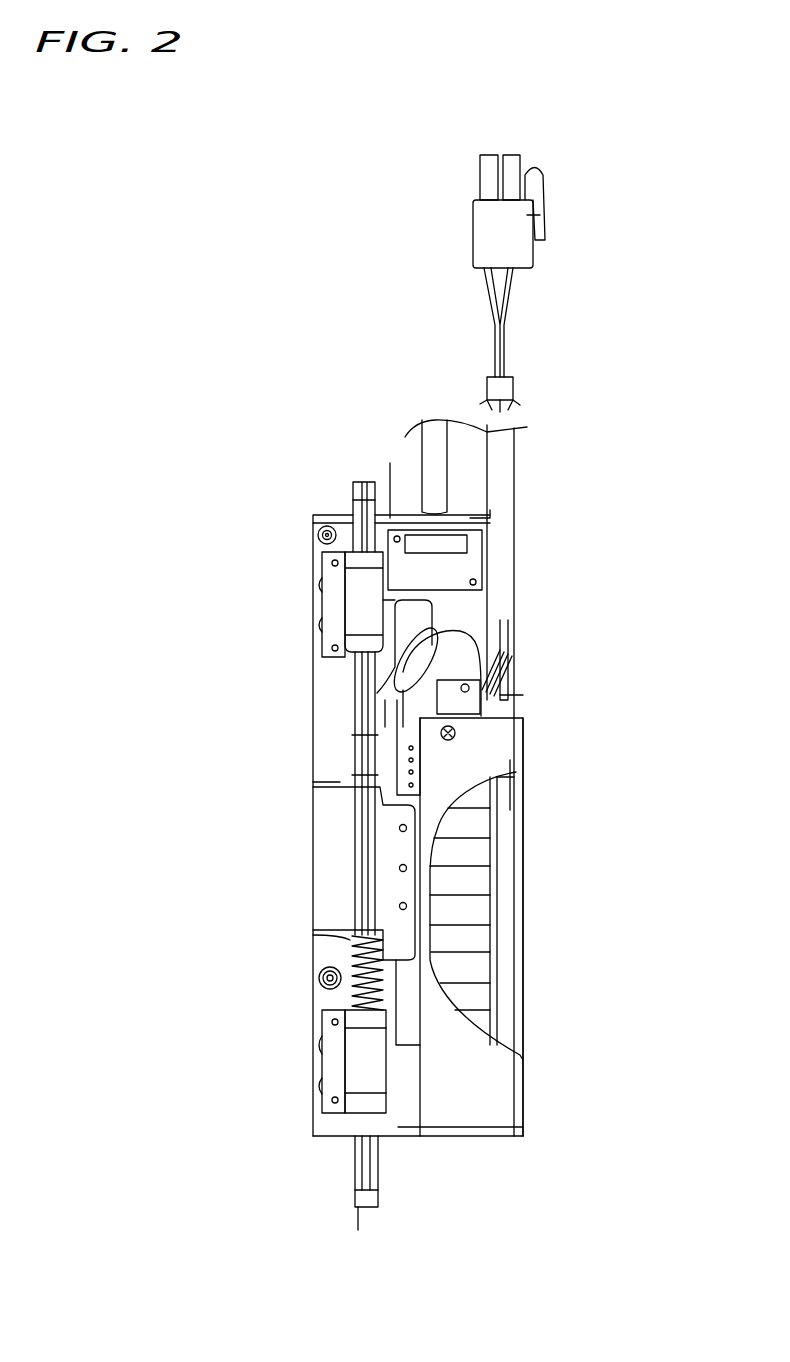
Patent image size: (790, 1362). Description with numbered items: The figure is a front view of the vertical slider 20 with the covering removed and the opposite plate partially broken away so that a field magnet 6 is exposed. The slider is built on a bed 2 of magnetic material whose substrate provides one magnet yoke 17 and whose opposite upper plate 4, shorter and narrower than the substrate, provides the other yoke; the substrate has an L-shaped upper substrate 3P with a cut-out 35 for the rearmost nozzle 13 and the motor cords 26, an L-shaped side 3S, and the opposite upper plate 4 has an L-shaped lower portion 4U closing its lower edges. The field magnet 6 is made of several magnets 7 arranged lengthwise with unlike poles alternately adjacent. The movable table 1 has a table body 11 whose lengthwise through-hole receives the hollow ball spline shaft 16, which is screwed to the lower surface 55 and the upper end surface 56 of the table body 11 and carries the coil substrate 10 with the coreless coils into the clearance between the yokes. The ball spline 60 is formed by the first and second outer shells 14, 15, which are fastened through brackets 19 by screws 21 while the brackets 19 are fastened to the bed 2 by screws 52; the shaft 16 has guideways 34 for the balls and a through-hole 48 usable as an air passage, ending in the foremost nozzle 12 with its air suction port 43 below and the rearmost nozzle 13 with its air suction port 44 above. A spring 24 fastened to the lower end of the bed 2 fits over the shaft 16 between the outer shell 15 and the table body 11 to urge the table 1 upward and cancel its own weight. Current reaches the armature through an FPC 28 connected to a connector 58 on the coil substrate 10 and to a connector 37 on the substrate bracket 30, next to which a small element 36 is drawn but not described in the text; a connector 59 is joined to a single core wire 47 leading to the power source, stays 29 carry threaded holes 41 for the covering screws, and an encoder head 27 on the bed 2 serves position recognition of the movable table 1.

The movable table 1 is at (330, 835).
The bed 2 is at (490, 608).
The L-shaped upper substrate 3P is at (391, 515).
The L-shaped side 3S is at (385, 597).
The opposite upper plate 4 is at (465, 1068).
The L-shaped lower portion 4U is at (478, 1136).
The field magnet 6 is at (492, 920).
The magnets 7 is at (465, 908).
The coil substrate 10 is at (427, 790).
The table body 11 is at (335, 862).
The foremost nozzle 12 is at (352, 1180).
The rearmost nozzle 13 is at (378, 482).
The first outer shell 14 is at (362, 598).
The second outer shell 15 is at (360, 1068).
The ball spline shaft 16 is at (354, 516).
The magnet yoke 17 is at (510, 1095).
The brackets 19 is at (333, 610).
The vertical slider 20 is at (300, 497).
The screws 21 is at (322, 632).
The spring 24 is at (360, 955).
The motor cords 26 is at (500, 477).
The encoder head 27 is at (437, 470).
The FPC 28 is at (520, 625).
The stays 29 is at (320, 533).
The substrate bracket 30 is at (497, 818).
The guideways 34 is at (360, 770).
The cut-out 35 is at (352, 500).
The holder 36 is at (520, 700).
The connector 37 is at (520, 668).
The threaded holes 41 is at (312, 520).
The air suction port 43 is at (360, 1208).
The air suction port 44 is at (358, 482).
The single core wire 47 is at (507, 318).
The through-hole 48 is at (360, 742).
The screws 52 is at (330, 565).
The lower surface 55 is at (355, 938).
The upper end surface 56 is at (312, 782).
The connector 58 is at (380, 790).
The connector 59 is at (495, 228).
The ball spline 60 is at (472, 563).